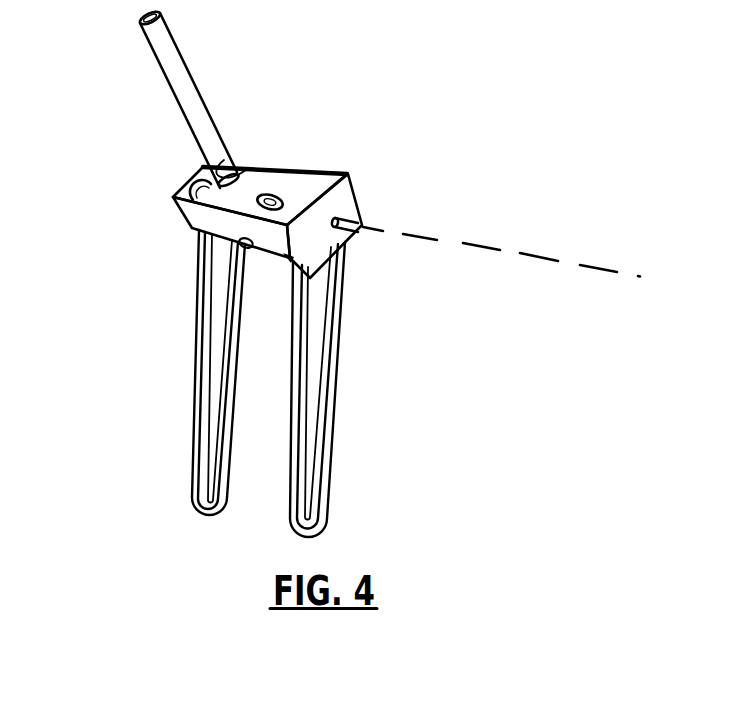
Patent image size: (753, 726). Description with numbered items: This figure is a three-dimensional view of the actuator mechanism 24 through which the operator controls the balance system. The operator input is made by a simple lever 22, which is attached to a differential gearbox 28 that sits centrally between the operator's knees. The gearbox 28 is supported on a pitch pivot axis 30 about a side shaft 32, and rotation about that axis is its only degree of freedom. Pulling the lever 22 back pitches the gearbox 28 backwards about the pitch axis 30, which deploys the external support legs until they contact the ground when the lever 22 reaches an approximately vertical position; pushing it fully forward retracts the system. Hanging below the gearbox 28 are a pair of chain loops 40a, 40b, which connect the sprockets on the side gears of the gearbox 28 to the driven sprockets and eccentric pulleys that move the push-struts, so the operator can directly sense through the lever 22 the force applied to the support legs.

The lever 22 is at (167, 44).
The connector assembly 24 is at (373, 97).
The differential gearbox 28 is at (187, 212).
The pitch pivot axis 30 is at (555, 252).
The side shaft 32 is at (353, 215).
The chain loop 40a is at (202, 378).
The chain loop 40b is at (323, 410).